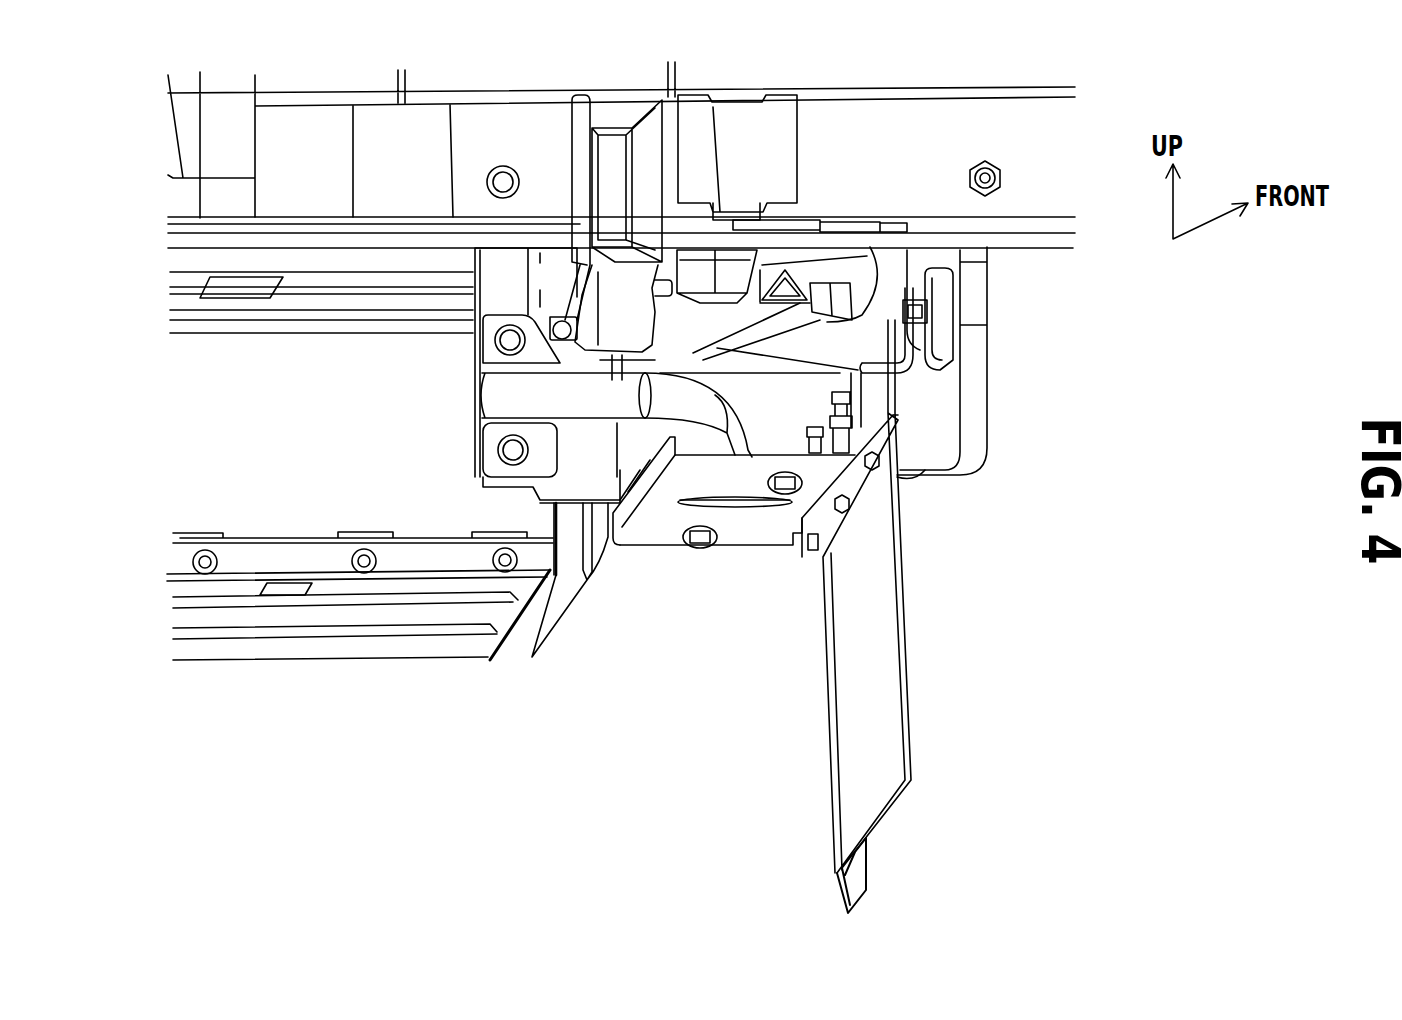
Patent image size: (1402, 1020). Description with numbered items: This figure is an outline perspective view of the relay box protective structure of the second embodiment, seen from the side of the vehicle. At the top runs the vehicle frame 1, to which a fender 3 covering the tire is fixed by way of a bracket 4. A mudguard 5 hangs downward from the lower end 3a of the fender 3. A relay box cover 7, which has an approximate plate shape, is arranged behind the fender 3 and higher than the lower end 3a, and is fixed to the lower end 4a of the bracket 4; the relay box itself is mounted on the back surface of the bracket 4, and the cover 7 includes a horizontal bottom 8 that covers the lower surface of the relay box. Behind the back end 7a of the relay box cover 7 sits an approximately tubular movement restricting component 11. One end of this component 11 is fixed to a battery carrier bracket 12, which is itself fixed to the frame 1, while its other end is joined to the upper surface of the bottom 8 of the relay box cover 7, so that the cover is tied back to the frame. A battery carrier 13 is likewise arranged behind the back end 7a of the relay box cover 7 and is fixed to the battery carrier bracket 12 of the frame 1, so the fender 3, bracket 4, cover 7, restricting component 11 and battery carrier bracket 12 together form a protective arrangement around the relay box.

The vehicle frame 1 is at (1019, 127).
The fender 3 is at (977, 402).
The lower end of the fender 3a is at (913, 478).
The bracket 4 is at (887, 377).
The lower end of the bracket 4a is at (900, 403).
The mudguard 5 is at (868, 812).
The relay box cover 7 is at (756, 560).
The back end of the relay box cover 7a is at (640, 507).
The horizontal bottom 8 is at (655, 530).
The movement restricting component 11 is at (720, 440).
The battery carrier bracket 12 is at (572, 503).
The battery carrier 13 is at (507, 663).